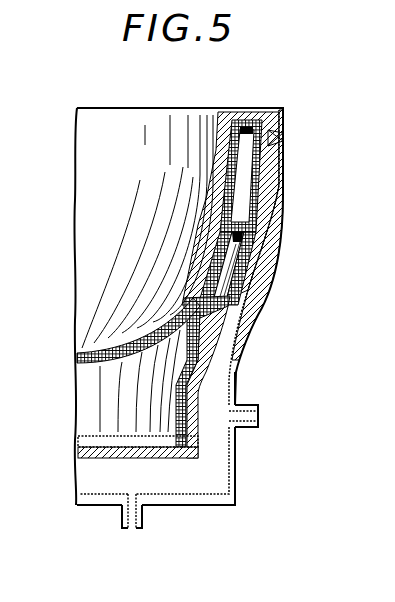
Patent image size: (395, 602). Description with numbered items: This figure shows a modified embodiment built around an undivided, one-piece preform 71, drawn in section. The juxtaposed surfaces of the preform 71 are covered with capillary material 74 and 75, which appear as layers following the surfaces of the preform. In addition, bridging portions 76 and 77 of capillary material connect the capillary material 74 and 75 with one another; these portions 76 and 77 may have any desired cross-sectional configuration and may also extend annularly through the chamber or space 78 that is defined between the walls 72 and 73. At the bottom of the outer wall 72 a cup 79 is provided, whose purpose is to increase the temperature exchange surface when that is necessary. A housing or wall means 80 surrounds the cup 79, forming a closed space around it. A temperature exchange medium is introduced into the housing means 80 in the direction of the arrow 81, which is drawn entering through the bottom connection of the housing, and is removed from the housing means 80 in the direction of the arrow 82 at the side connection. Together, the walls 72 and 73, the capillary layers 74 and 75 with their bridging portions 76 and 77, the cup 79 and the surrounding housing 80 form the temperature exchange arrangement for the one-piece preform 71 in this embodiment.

The preform 71 is at (287, 215).
The outer wall 72 is at (272, 190).
The wall 73 is at (103, 333).
The capillary material 74 is at (258, 286).
The capillary material 75 is at (103, 363).
The bridging portion 76 is at (264, 250).
The bridging portion 77 is at (254, 313).
The chamber or space 78 is at (270, 140).
The cup 79 is at (80, 460).
The housing or wall means 80 is at (235, 469).
The arrow 81 is at (132, 533).
The arrow 82 is at (299, 418).